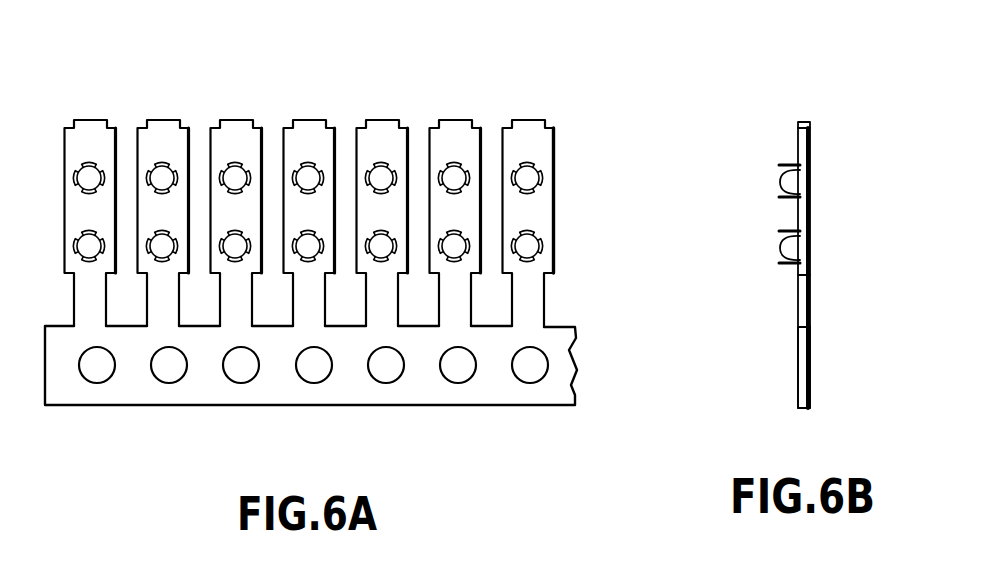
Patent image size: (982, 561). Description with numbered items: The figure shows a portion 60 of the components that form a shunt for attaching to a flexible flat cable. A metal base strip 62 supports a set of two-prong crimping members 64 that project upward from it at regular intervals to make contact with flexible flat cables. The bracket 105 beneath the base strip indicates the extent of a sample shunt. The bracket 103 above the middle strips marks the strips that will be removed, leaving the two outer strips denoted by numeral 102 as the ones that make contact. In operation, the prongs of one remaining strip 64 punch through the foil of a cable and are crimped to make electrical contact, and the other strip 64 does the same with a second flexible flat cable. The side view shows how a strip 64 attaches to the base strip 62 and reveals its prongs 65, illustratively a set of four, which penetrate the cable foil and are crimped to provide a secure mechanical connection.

In FIG. 6A, the portion of shunt components 60 is at (349, 263).
In FIG. 6A, the metal base strip 62 is at (578, 335).
In FIG. 6B, the metal base strip 62 is at (823, 327).
In FIG. 6A, the two-prong crimping member 64 is at (553, 140).
In FIG. 6A, the prongs 65 is at (538, 180).
In FIG. 6B, the prongs 65 is at (783, 180).
In FIG. 6A, the contact strips 102 is at (165, 118).
In FIG. 6A, the bracket indicating strips to be removed 103 is at (215, 108).
In FIG. 6A, the bracket indicating extent of sample shunt 105 is at (548, 418).